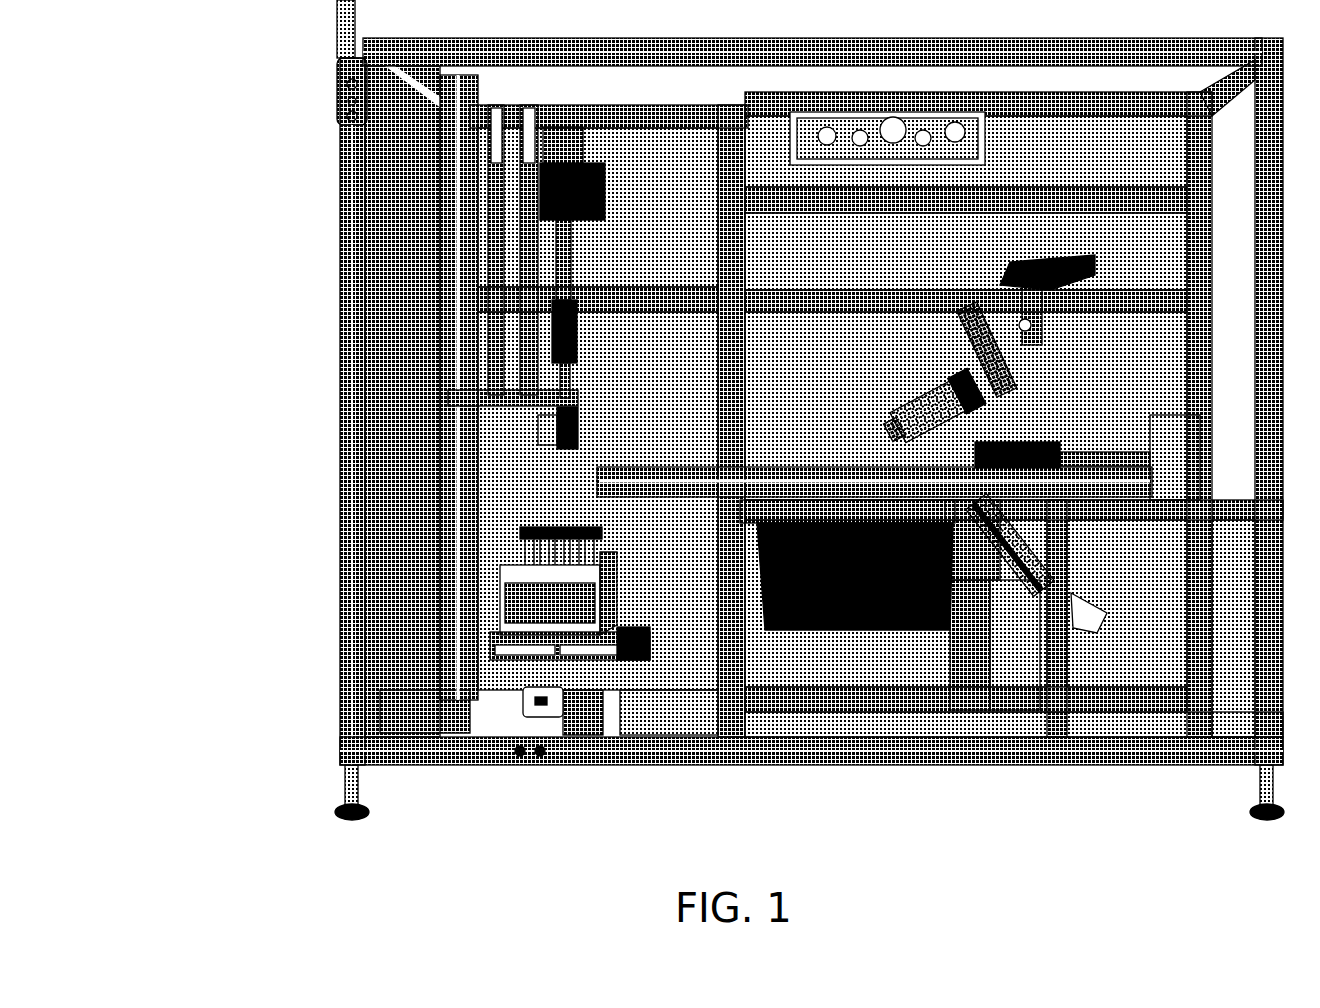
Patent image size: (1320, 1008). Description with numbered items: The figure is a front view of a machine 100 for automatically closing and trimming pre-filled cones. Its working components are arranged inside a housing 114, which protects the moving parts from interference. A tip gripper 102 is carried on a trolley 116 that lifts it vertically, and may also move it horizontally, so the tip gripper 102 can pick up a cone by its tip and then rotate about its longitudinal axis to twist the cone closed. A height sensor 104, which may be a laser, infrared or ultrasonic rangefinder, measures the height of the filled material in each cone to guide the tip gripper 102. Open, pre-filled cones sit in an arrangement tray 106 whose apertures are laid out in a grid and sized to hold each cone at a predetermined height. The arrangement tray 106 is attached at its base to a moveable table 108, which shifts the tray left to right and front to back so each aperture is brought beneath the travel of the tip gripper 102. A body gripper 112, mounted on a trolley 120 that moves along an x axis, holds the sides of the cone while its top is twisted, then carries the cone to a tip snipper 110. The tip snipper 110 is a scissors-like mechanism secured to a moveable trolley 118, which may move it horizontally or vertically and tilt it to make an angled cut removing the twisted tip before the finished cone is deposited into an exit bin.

The machine 100 is at (216, 90).
The tip gripper 102 is at (560, 345).
The height sensor 104 is at (548, 432).
The arrangement tray 106 is at (500, 578).
The moveable table 108 is at (523, 697).
The tip snipper 110 is at (883, 431).
The body gripper 112 is at (985, 470).
The housing 114 is at (585, 37).
The trolley 116 is at (336, 160).
The moveable trolley 118 is at (960, 385).
The trolley 120 is at (535, 766).